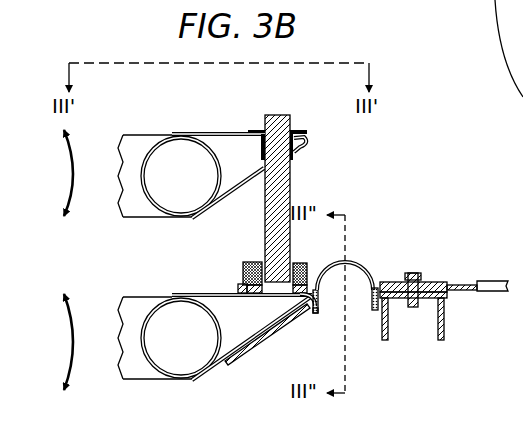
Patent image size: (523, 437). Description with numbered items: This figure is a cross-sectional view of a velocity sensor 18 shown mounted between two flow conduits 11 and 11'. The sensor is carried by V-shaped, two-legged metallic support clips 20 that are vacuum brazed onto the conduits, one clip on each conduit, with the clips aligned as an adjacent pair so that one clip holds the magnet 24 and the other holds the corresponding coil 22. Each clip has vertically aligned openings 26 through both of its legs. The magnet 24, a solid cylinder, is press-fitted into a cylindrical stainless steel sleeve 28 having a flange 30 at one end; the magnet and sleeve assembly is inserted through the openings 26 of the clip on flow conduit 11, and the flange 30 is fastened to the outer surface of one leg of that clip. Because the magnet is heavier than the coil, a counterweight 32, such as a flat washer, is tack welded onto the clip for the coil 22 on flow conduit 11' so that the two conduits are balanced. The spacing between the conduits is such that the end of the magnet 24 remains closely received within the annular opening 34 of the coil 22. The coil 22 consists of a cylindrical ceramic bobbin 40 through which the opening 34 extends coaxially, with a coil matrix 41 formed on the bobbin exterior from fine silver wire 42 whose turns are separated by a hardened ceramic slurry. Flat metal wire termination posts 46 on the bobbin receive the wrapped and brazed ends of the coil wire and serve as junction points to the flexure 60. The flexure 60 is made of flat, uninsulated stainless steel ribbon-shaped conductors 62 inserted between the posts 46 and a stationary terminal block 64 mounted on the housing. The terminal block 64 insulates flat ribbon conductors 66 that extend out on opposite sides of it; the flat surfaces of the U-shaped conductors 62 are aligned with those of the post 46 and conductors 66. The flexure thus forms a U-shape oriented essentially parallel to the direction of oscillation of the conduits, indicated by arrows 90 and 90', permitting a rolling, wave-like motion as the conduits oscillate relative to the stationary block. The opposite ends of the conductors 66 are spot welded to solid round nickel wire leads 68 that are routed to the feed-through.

The flow conduit 11 is at (156, 190).
The flow conduit 11' is at (154, 322).
The velocity sensor 18 is at (182, 109).
The support clip 20 is at (302, 142).
The coil 22 is at (243, 285).
The magnet 24 is at (272, 114).
The opening 26 is at (262, 150).
The sleeve 28 is at (294, 155).
The flange 30 is at (300, 130).
The counterweight 32 is at (245, 360).
The annular opening 34 is at (250, 262).
The bobbin 40 is at (300, 298).
The coil matrix 41 is at (329, 300).
The silver wire 42 is at (297, 263).
The wire termination post 46 is at (316, 312).
The flexure 60 is at (356, 249).
The ribbon shaped conductor 62 is at (368, 276).
The terminal block 64 is at (438, 299).
The flat ribbon conductor 66 is at (384, 341).
The nickel wire lead 68 is at (492, 281).
The arrow 90 is at (48, 173).
The arrow 90' is at (45, 342).